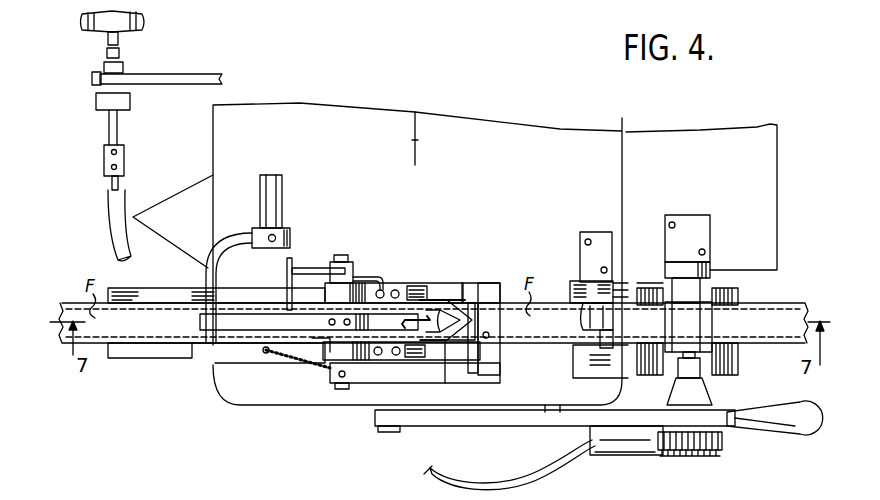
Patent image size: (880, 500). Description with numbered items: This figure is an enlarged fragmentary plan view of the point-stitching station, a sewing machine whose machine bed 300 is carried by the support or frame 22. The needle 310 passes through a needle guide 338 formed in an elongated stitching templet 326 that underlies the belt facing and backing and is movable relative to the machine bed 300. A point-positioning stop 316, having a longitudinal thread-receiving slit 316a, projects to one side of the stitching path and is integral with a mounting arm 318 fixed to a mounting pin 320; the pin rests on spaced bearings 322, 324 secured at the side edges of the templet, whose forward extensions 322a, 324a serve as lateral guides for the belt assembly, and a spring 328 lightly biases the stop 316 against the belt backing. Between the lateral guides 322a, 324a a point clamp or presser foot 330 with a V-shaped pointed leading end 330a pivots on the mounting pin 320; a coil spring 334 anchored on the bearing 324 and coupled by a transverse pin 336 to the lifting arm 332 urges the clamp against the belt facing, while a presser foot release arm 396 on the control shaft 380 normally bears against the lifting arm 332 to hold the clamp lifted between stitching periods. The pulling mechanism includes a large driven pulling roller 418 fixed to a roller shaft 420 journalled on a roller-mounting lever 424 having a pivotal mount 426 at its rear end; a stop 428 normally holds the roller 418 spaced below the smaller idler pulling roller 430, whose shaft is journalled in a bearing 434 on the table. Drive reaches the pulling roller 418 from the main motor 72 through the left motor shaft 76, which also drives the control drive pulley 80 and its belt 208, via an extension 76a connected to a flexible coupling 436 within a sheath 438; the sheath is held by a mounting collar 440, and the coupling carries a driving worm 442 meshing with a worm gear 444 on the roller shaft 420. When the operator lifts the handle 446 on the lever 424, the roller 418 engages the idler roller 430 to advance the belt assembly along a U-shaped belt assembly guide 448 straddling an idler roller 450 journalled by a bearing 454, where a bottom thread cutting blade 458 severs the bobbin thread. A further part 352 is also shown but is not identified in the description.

The main motor 72 is at (146, 22).
The left motor shaft 76 is at (106, 52).
The control drive pulley 80 is at (95, 87).
The belt 208 is at (198, 75).
The extension of the left motor shaft 76a is at (110, 126).
The flexible coupling 436 is at (110, 180).
The sheath 438 is at (115, 226).
The machine bed 300 is at (278, 115).
The support or frame 22 is at (771, 128).
The control shaft 380 is at (283, 182).
The presser foot release arm 396 is at (206, 270).
The lifting arm 332 is at (243, 323).
The transverse pin 336 is at (291, 262).
The coil spring 334 is at (310, 267).
The bearing 324 is at (353, 272).
The forward extension 324a is at (425, 290).
The point clamp or presser foot 330 is at (414, 300).
The needle 310 is at (433, 305).
The V-shaped pointed leading end 330a is at (456, 302).
The mounting pin 320 is at (318, 343).
The bearing 322 is at (325, 352).
The spring 328 is at (318, 362).
The mounting arm 318 is at (362, 380).
The needle guide 338 is at (414, 357).
The forward extension 322a is at (445, 375).
The point-positioning stop 316 is at (488, 292).
The thread-receiving slit 316a is at (477, 355).
The stitching templet 326 is at (205, 355).
The guide block 352 is at (135, 358).
The bearing 454 is at (583, 280).
The idler roller 450 is at (572, 282).
The U-shaped belt assembly guide 448 is at (612, 283).
The bottom thread cutting blade 458 is at (600, 340).
The stop 428 is at (555, 392).
The roller shaft 420 is at (691, 261).
The collar 434 is at (712, 264).
The idler pulling roller 430 is at (692, 322).
The driven pulling roller 418 is at (742, 295).
The roller-mounting lever 424 is at (524, 418).
The pivotal mount 426 is at (392, 433).
The mounting collar 440 is at (600, 455).
The driving worm 442 is at (708, 452).
The worm gear 444 is at (724, 440).
The handle 446 is at (812, 425).